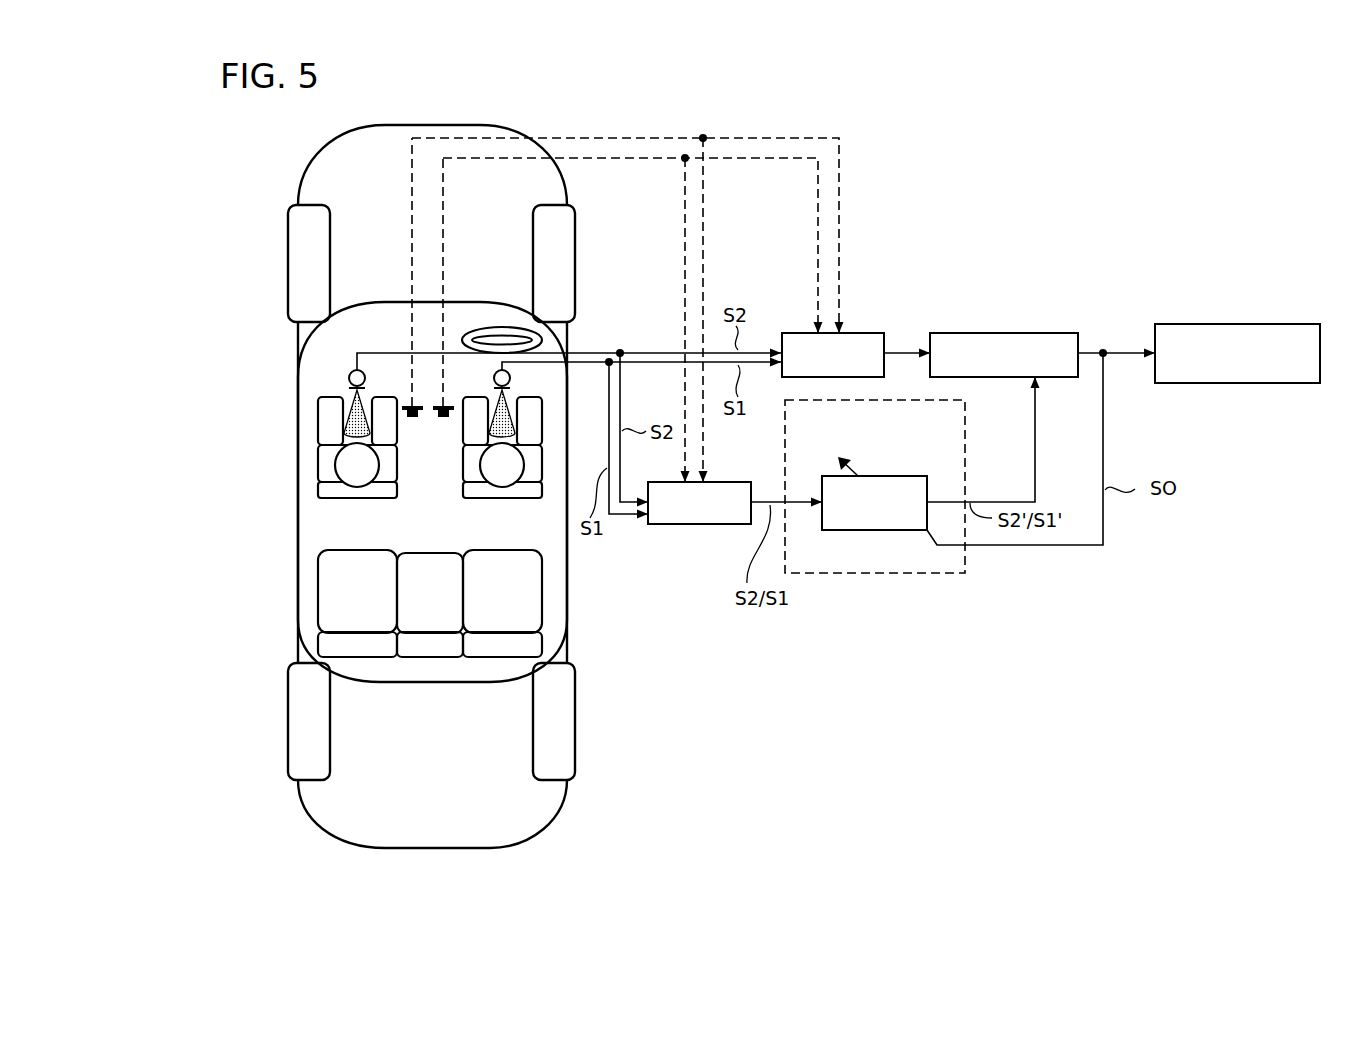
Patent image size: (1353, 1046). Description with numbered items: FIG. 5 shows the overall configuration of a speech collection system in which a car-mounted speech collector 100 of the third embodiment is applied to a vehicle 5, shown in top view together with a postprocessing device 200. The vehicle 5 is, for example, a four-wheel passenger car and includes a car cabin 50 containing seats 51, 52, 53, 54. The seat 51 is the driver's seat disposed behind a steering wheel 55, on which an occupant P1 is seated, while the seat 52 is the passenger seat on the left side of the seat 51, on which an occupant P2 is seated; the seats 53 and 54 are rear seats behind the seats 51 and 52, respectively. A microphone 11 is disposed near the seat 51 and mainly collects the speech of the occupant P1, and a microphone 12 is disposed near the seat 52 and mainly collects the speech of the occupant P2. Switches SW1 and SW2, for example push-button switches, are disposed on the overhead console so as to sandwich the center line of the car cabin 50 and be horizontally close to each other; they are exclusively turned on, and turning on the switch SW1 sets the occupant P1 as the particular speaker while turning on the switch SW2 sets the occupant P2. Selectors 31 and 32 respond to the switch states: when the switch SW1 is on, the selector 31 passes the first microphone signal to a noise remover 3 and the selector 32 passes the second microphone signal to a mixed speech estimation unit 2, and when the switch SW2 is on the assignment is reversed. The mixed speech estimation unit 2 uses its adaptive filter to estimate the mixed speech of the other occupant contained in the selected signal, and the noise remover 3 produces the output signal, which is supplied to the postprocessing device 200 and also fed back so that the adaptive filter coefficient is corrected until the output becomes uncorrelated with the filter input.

The vehicle 5 is at (438, 125).
The car-mounted speech collector 100 is at (767, 127).
The car cabin 50 is at (383, 302).
The steering wheel 55 is at (483, 328).
The microphone 11 is at (512, 375).
The microphone 12 is at (350, 373).
The switch SW1 is at (445, 420).
The switch SW2 is at (410, 403).
The occupant P1 is at (507, 480).
The occupant P2 is at (347, 458).
The seat 51 is at (483, 498).
The seat 52 is at (357, 498).
The seat 53 is at (497, 657).
The seat 54 is at (352, 657).
The selector 31 is at (856, 333).
The selector 32 is at (718, 482).
The noise remover 3 is at (1020, 333).
The mixed speech estimation unit 2 is at (967, 480).
The postprocessing device 200 is at (1250, 324).